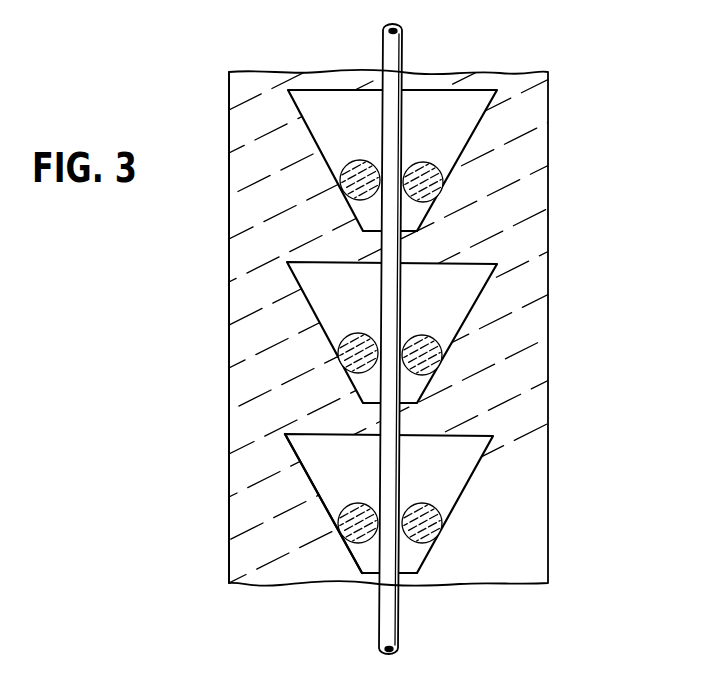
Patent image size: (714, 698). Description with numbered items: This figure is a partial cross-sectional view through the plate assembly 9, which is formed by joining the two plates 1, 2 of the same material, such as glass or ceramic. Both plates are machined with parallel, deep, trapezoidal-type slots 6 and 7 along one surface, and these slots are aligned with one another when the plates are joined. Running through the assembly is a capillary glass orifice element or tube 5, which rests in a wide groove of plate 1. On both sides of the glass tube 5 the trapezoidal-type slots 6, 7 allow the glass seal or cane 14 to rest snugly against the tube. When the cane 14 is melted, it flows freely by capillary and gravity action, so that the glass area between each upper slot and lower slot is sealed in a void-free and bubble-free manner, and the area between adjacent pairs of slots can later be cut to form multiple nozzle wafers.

The plate 1 is at (538, 316).
The plate 2 is at (240, 302).
The capillary glass orifice element 5 is at (403, 58).
The trapezoidal-type slot 6 is at (463, 468).
The trapezoidal-type slot 7 is at (308, 452).
The plate assembly 9 is at (573, 371).
The glass seal or cane 14 is at (424, 376).